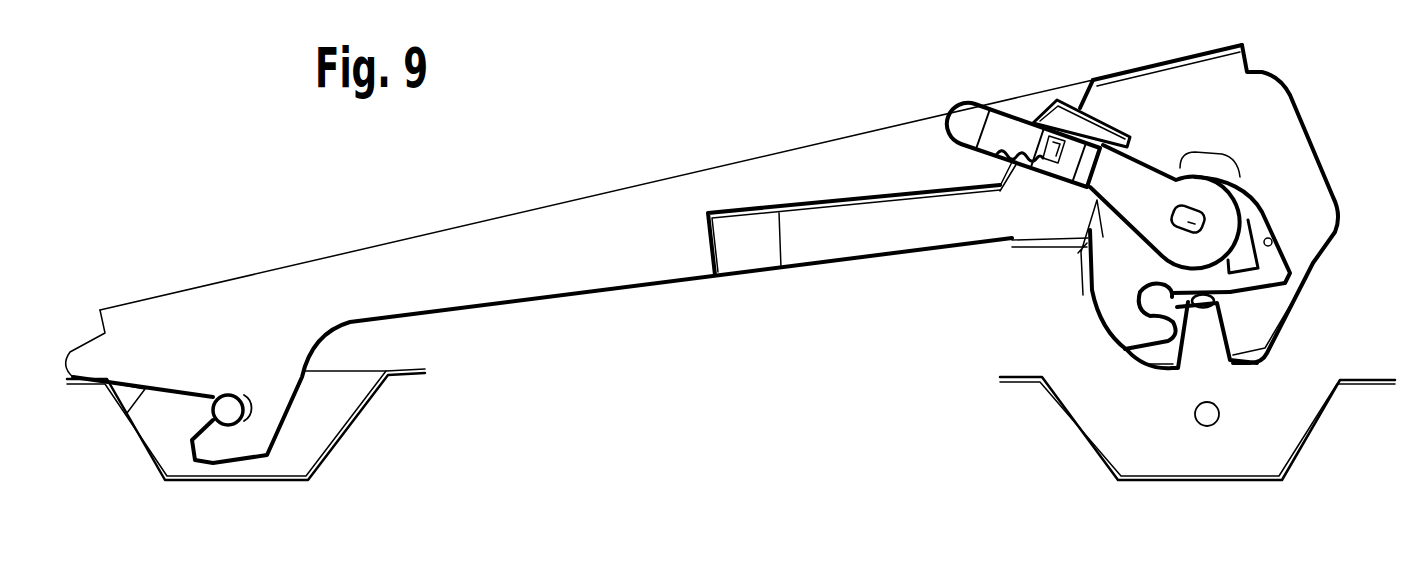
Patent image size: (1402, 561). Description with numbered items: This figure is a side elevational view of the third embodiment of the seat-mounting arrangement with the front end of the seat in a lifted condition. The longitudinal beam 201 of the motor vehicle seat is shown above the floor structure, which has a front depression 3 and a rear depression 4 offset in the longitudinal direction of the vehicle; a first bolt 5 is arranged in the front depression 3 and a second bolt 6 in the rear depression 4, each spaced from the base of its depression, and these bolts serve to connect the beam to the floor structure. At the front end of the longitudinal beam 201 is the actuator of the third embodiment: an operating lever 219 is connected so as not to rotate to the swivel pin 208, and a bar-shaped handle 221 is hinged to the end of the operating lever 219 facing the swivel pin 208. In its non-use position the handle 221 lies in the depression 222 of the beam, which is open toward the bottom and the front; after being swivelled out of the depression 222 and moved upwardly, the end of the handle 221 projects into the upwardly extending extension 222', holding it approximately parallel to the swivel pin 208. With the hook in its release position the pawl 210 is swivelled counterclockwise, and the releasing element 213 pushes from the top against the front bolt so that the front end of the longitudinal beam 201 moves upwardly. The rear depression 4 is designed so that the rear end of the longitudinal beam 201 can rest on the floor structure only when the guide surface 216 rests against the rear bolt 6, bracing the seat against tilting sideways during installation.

The longitudinal beam 201 is at (448, 256).
The depression 222 is at (862, 231).
The extension 222' is at (1069, 98).
The bar-shaped handle 221 is at (975, 127).
The operating lever 219 is at (1130, 173).
The pawl 210 is at (1213, 170).
The swivel pin 208 is at (1205, 222).
The releasing element 213 is at (1230, 287).
The second bolt 6 is at (219, 400).
The guide surface 216 is at (127, 415).
The rear depression 4 is at (318, 412).
The front depression 3 is at (1100, 410).
The first bolt 5 is at (1195, 418).